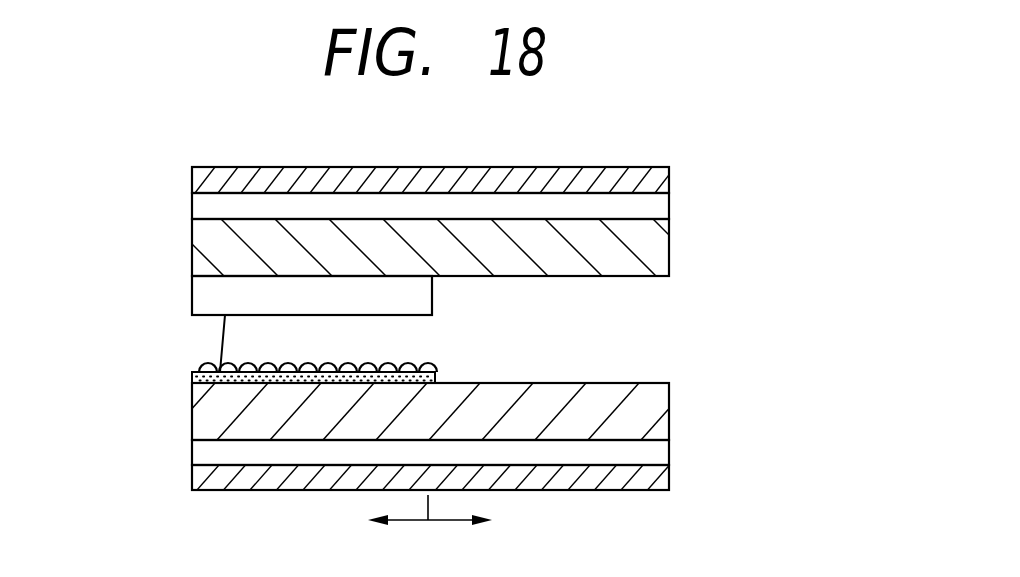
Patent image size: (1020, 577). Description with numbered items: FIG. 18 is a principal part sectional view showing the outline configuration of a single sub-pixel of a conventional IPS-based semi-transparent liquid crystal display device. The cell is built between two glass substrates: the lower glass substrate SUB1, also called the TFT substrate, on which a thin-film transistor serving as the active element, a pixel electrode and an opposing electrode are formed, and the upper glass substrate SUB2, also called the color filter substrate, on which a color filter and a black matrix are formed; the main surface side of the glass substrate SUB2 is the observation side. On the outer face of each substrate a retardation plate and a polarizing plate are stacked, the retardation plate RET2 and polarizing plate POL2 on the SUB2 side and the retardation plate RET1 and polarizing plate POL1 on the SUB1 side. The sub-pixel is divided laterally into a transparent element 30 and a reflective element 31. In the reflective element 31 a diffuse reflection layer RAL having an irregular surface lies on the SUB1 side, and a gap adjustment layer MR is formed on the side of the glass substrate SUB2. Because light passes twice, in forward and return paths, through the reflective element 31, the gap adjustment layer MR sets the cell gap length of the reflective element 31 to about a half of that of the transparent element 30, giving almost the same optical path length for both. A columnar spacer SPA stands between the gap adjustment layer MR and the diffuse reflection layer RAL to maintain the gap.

The polarizing plate POL2 is at (663, 180).
The retardation plate RET2 is at (663, 204).
The glass substrate (color filter substrate) SUB2 is at (197, 241).
The gap adjustment layer MR is at (428, 291).
The columnar spacer SPA is at (197, 340).
The diffuse reflection layer RAL is at (434, 372).
The glass substrate (TFT substrate) SUB1 is at (197, 403).
The retardation plate RET1 is at (663, 452).
The polarizing plate POL1 is at (663, 474).
The reflective element 31 is at (375, 521).
The transparent element 30 is at (480, 521).